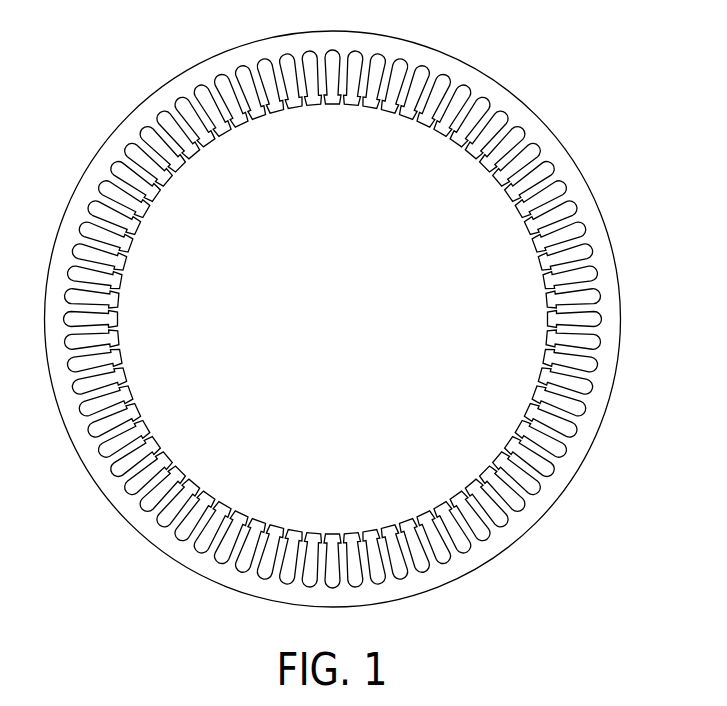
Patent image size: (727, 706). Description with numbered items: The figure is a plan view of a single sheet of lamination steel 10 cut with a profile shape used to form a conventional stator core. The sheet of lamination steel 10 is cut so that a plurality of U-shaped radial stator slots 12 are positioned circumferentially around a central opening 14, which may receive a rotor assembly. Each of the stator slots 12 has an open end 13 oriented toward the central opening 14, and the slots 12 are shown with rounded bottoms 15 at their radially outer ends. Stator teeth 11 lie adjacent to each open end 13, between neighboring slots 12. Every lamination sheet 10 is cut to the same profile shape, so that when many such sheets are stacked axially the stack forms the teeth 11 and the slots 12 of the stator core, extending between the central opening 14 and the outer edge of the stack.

The sheet of lamination steel 10 is at (580, 135).
The stator teeth 11 is at (546, 248).
The stator slots 12 is at (193, 152).
The open ends 13 is at (117, 375).
The central opening 14 is at (352, 329).
The rounded bottoms 15 is at (238, 570).